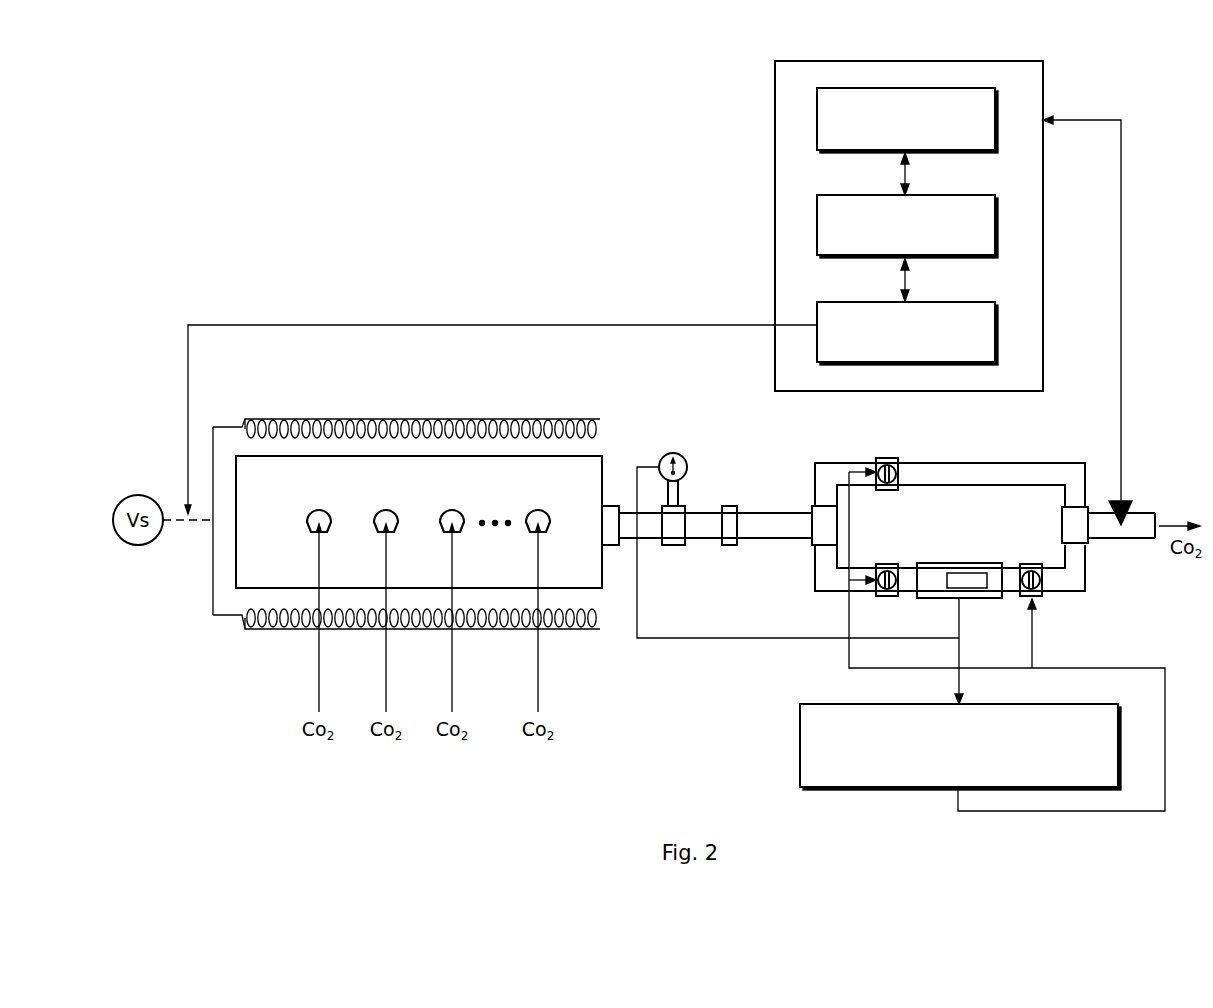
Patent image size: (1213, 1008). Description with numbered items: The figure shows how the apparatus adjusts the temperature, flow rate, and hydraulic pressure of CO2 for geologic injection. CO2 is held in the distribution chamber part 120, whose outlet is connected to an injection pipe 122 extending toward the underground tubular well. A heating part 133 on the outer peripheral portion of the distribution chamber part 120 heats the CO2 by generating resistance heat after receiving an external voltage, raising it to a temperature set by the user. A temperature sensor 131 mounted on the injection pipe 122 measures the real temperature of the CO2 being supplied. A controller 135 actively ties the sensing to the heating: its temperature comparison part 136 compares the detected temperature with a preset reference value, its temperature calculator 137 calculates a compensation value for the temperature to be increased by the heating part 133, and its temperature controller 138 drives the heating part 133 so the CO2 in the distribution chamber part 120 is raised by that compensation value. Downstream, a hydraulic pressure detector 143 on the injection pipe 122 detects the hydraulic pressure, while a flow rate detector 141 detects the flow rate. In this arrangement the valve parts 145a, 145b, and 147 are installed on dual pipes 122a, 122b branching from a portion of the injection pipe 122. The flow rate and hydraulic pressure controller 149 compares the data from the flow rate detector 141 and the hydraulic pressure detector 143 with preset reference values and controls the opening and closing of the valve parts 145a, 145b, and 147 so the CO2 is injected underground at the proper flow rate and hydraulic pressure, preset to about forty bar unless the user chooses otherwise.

The distribution chamber part 120 is at (345, 476).
The heating part 133 is at (450, 418).
The controller 135 is at (1043, 198).
The temperature comparison part 136 is at (817, 118).
The temperature calculator 137 is at (817, 222).
The temperature controller 138 is at (817, 315).
The hydraulic pressure detector 143 is at (681, 453).
The injection pipe 122 is at (765, 520).
The dual pipe 122a is at (970, 472).
The dual pipe 122b is at (1070, 590).
The valve part 145a is at (889, 458).
The valve part 145b is at (885, 564).
The flow rate detector 141 is at (945, 563).
The valve part 147 is at (1029, 564).
The temperature sensor 131 is at (1128, 506).
The flow rate and hydraulic pressure controller 149 is at (800, 745).